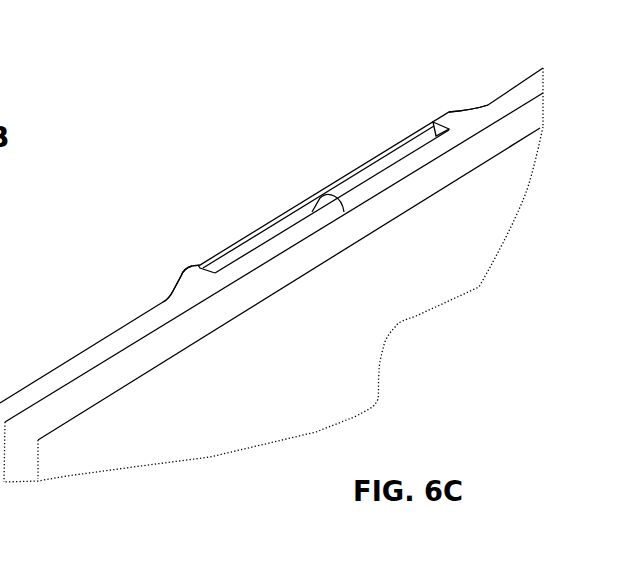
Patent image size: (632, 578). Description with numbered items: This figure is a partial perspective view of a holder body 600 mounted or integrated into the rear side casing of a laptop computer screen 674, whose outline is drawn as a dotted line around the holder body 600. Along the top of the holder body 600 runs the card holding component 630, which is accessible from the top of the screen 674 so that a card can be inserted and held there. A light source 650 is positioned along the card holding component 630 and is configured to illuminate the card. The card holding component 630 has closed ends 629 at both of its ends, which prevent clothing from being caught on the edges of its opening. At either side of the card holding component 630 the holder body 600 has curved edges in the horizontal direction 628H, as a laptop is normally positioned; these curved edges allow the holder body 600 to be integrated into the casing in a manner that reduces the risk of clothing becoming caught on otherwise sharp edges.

The holder body 600 is at (234, 140).
The card holding component 630 is at (250, 238).
The closed ends 629 is at (208, 260).
The curved edges in the horizontal direction 628H is at (158, 270).
The light source 650 is at (320, 196).
The laptop computer screen 674 is at (338, 357).